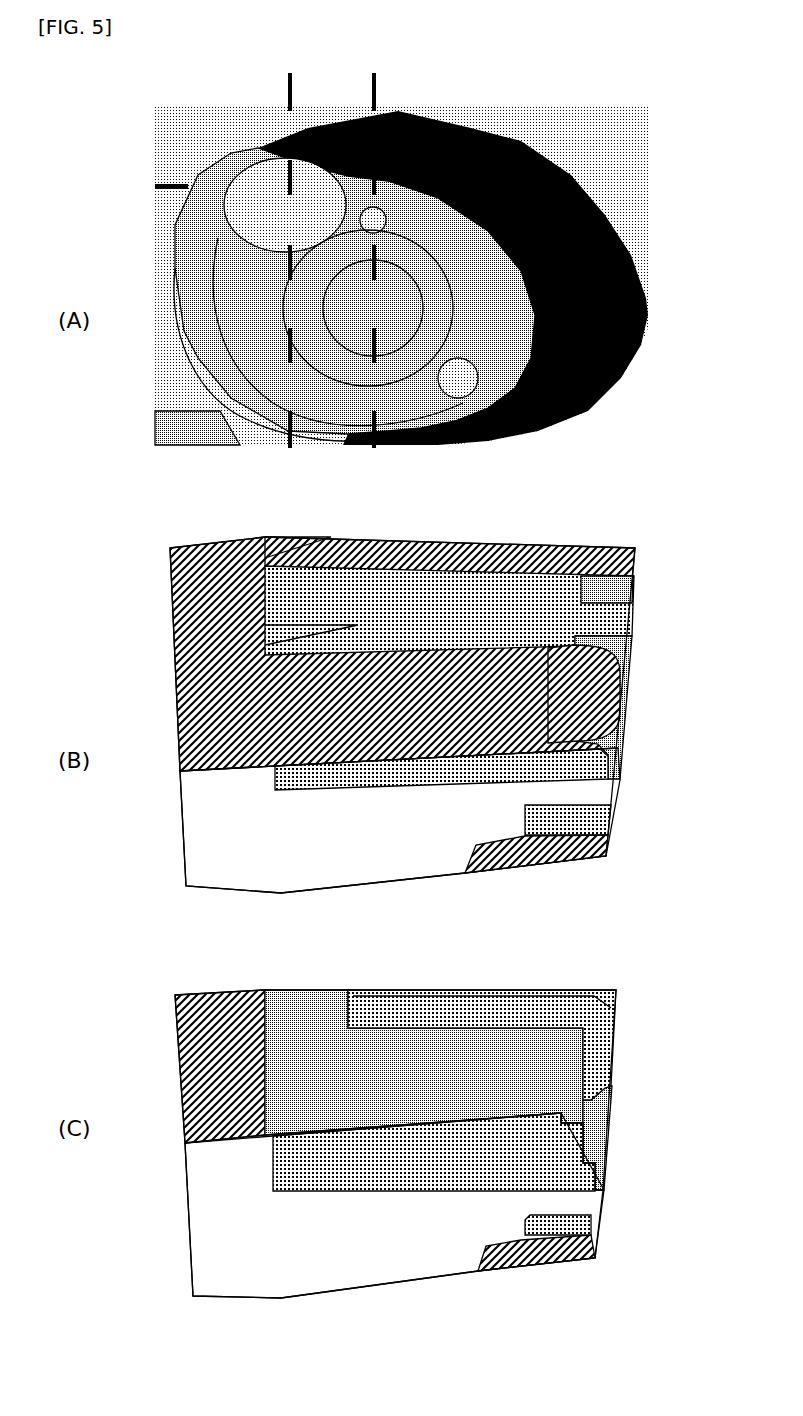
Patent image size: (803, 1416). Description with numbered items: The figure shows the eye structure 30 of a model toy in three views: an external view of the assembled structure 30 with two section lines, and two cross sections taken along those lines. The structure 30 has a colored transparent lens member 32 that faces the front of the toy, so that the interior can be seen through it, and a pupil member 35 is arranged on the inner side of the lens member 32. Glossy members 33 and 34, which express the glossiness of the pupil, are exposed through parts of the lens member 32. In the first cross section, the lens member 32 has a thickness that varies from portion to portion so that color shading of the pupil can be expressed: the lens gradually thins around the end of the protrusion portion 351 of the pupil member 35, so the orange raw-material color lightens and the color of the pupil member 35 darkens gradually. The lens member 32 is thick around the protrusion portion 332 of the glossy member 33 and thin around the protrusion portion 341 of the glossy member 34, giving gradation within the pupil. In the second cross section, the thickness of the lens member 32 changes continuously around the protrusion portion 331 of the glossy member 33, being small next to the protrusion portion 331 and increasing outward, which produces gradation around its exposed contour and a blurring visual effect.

The structure 30 is at (650, 142).
The lens member 32 is at (612, 647).
The glossy member 33 is at (442, 602).
The glossy member 34 is at (390, 822).
The pupil member 35 is at (182, 650).
The protrusion portion 331 is at (608, 1043).
The protrusion portion 332 is at (623, 613).
The protrusion portion 341 is at (610, 783).
The protrusion portion 351 is at (612, 693).